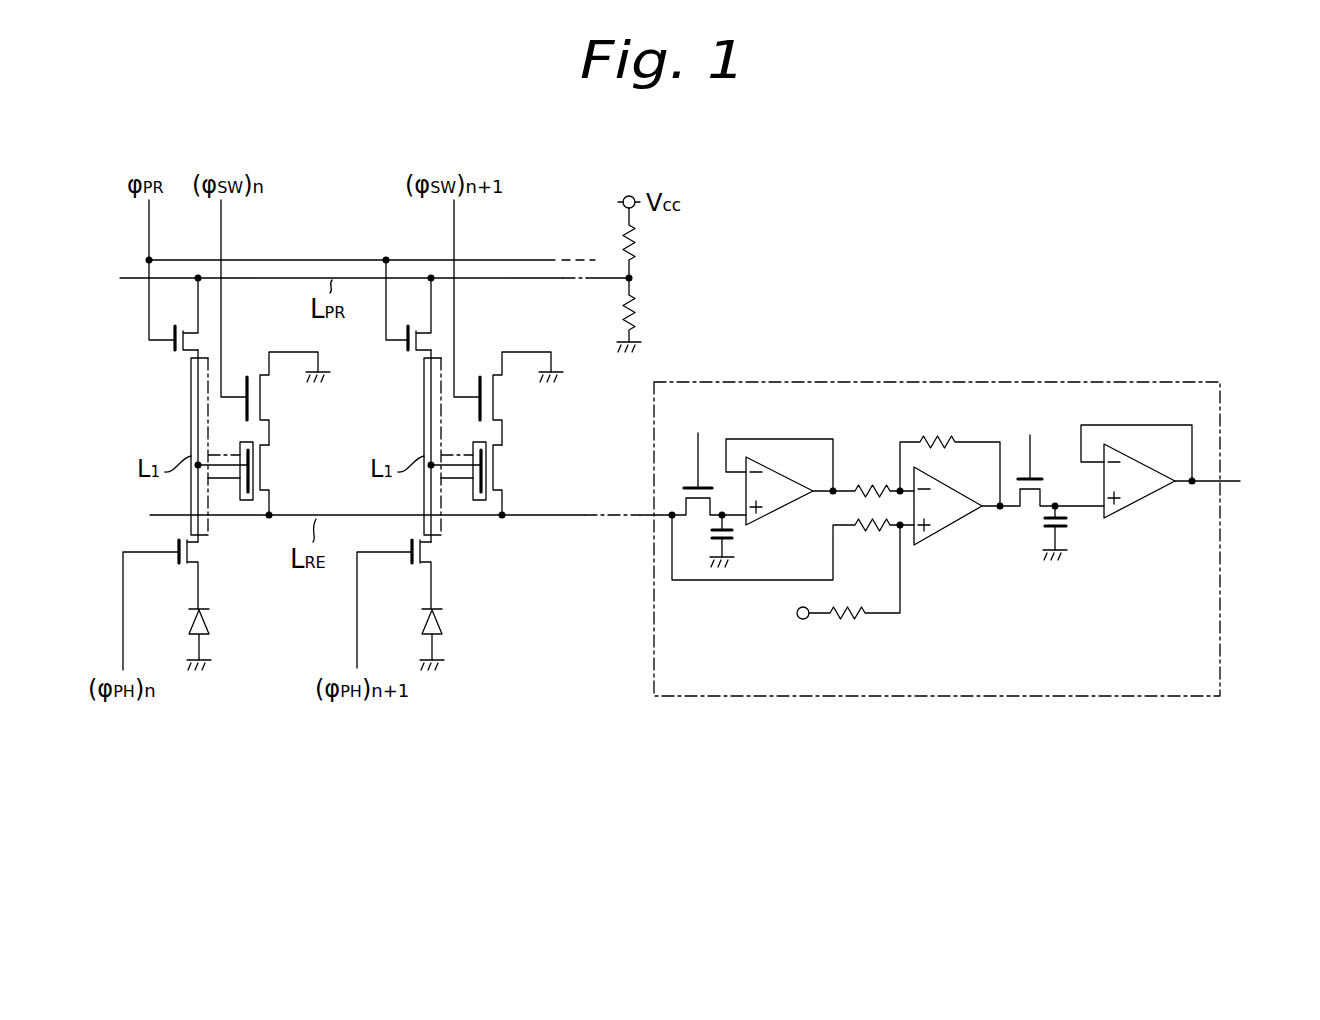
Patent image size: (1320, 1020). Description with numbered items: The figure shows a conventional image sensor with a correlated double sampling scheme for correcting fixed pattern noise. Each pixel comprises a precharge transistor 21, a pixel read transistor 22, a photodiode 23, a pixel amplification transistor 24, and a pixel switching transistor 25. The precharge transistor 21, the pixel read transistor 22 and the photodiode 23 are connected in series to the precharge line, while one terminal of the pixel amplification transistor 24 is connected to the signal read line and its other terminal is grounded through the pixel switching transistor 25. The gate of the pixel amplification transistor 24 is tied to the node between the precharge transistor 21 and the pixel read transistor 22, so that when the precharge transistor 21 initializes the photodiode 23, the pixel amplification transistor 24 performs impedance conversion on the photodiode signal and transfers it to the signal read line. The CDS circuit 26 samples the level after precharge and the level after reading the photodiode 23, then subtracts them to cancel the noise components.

The precharge transistor 21 is at (178, 350).
The pixel read transistor 22 is at (177, 563).
The photodiode 23 is at (211, 622).
The pixel amplification transistor 24 is at (270, 466).
The pixel switching transistor 25 is at (270, 402).
The correlated double sampling (CDS) circuit 26 is at (891, 382).